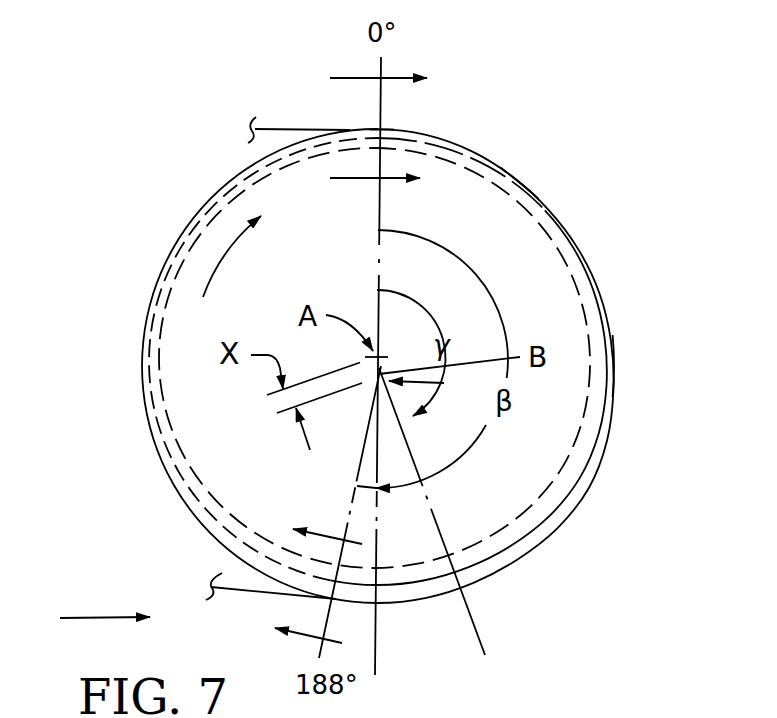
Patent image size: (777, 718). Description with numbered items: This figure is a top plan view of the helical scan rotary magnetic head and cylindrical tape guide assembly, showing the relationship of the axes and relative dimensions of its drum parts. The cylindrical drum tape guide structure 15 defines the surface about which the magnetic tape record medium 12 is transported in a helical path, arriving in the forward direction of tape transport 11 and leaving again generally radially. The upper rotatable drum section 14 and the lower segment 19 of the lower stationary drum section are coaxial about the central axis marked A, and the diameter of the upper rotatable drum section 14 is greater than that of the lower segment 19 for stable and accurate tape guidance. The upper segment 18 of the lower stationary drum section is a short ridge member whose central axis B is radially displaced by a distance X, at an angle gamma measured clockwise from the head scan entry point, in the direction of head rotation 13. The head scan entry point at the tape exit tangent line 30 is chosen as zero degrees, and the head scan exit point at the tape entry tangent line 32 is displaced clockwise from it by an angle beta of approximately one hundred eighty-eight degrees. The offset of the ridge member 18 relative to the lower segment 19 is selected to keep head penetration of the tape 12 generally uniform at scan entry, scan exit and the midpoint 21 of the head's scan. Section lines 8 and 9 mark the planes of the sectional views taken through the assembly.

The section line 8- 8 is at (395, 132).
The section line 9- 9 is at (305, 569).
The forward direction of tape transport 11 is at (88, 617).
The magnetic tape record medium 12 is at (274, 125).
The direction of head rotation 13 is at (238, 239).
The upper rotatable drum section 14 is at (148, 295).
The cylindrical drum tape guide structure 15 is at (544, 176).
The upper segment of the lower stationary drum section 18 is at (180, 238).
The lower segment of the lower stationary drum section 19 is at (152, 371).
The midpoint of the head's scan 21 is at (636, 377).
The tape exit tangent line 30 is at (389, 127).
The tape entry tangent line 32 is at (337, 602).